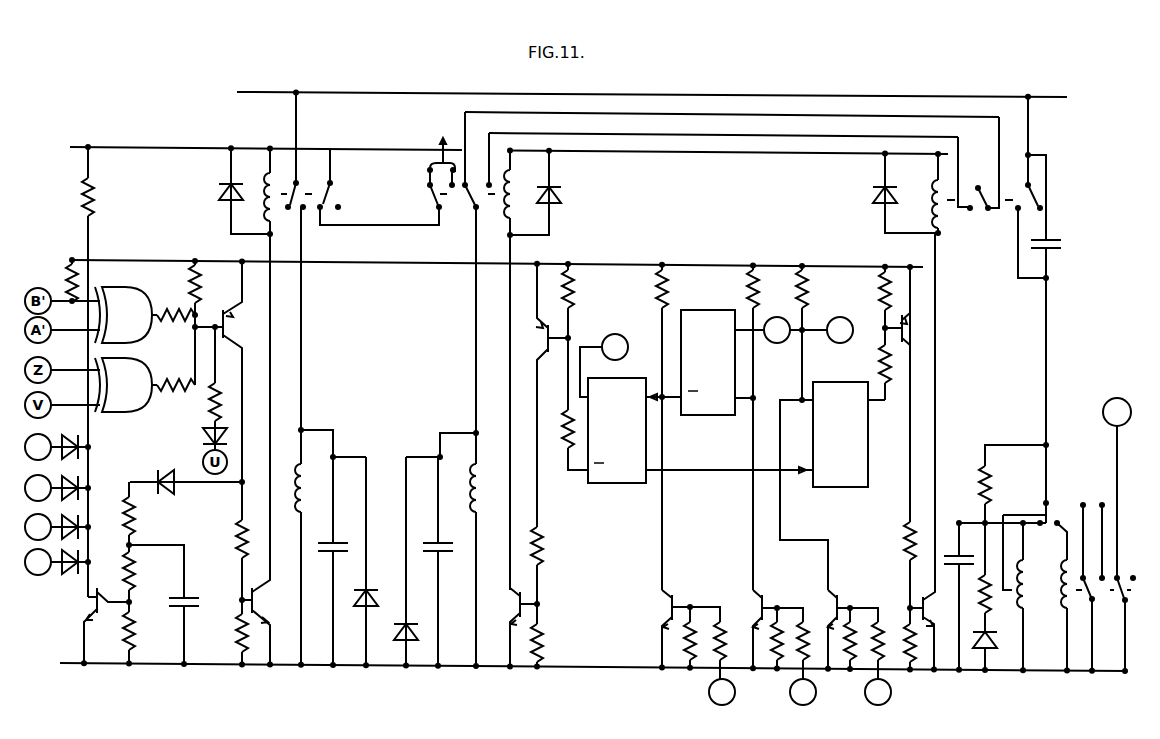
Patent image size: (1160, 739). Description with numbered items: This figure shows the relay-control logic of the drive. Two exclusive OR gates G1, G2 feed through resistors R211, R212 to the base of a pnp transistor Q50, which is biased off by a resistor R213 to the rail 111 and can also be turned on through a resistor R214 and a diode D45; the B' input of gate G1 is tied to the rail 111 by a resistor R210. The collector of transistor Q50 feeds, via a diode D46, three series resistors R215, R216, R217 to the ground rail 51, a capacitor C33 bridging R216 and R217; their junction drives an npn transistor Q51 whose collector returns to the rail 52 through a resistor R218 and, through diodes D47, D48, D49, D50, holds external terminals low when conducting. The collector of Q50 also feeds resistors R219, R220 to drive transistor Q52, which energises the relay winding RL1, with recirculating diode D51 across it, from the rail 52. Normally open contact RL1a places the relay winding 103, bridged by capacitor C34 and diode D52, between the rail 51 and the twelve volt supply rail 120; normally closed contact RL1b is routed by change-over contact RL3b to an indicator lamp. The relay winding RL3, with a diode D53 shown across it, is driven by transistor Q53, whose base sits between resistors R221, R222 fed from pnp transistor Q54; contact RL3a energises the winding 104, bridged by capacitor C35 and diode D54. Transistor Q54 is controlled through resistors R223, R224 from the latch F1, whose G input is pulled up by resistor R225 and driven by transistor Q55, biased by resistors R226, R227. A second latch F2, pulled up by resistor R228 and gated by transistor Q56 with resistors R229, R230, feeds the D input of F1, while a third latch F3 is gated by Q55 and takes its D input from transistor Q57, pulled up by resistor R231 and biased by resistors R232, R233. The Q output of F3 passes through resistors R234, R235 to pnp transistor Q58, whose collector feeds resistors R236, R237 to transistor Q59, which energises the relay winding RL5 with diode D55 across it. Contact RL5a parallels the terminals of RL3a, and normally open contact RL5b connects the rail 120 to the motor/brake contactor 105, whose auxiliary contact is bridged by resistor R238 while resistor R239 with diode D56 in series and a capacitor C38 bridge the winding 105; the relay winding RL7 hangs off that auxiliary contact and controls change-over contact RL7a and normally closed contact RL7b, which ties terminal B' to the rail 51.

The supply rail 120 is at (352, 92).
The rail 52 is at (172, 148).
The rail 111 is at (192, 260).
The rail 51 is at (435, 666).
The resistor R218 is at (100, 190).
The resistor R210 is at (53, 276).
The exclusive OR gate G1 is at (123, 305).
The exclusive OR gate G2 is at (122, 412).
The resistor R211 is at (170, 327).
The resistor R212 is at (181, 353).
The resistor R213 is at (188, 298).
The resistor R214 is at (208, 392).
The pnp transistor Q50 is at (245, 370).
The diode D45 is at (203, 437).
The diode D46 is at (165, 492).
The diode D47 is at (76, 447).
The diode D48 is at (74, 483).
The diode D49 is at (74, 521).
The diode D50 is at (73, 557).
The resistor R215 is at (154, 515).
The resistor R216 is at (160, 572).
The resistor R217 is at (152, 634).
The capacitor C33 is at (176, 606).
The npn transistor Q51 is at (84, 614).
The resistor R219 is at (238, 546).
The resistor R220 is at (220, 633).
The npn transistor Q52 is at (254, 612).
The relay winding RL1 is at (262, 198).
The current recirculating diode D51 is at (226, 187).
The normally open contact RL1a is at (300, 216).
The normally closed contact RL1b is at (332, 196).
The change over contact RL3a is at (468, 214).
The change over contact RL3b is at (430, 194).
The relay winding RL3 is at (535, 180).
The diode D53 is at (558, 190).
The relay winding 103 is at (308, 508).
The capacitor C34 is at (346, 548).
The current recirculating diode D52 is at (356, 596).
The relay winding 104 is at (480, 486).
The capacitor C35 is at (448, 552).
The current recirculating diode D54 is at (396, 628).
The pnp transistor Q54 is at (545, 345).
The resistor R222 is at (545, 550).
The npn transistor Q53 is at (512, 608).
The resistor R221 is at (546, 650).
The resistor R223 is at (596, 292).
The resistor R224 is at (565, 456).
The latch circuit F1 is at (696, 408).
The resistor R225 is at (656, 284).
The latch circuit F2 is at (767, 362).
The resistor R228 is at (746, 304).
The resistor R231 is at (808, 304).
The latch circuit F3 is at (849, 434).
The resistor R235 is at (886, 290).
The resistor R234 is at (896, 378).
The pnp transistor Q58 is at (906, 332).
The resistor R236 is at (903, 548).
The resistor R237 is at (908, 660).
The npn transistor Q59 is at (937, 453).
The npn transistor Q55 is at (660, 612).
The resistor R226 is at (686, 662).
The resistor R227 is at (738, 600).
The npn transistor Q56 is at (758, 596).
The resistor R229 is at (774, 662).
The resistor R230 is at (815, 606).
The npn transistor Q57 is at (832, 596).
The resistor R232 is at (848, 662).
The resistor R233 is at (879, 646).
The current recirculating diode D55 is at (872, 194).
The relay winding RL5 is at (930, 196).
The change-over contact RL5a is at (972, 212).
The normally open contact RL5b is at (1042, 196).
The resistor R238 is at (978, 490).
The capacitor C38 is at (950, 555).
The resistor R239 is at (990, 530).
The current recirculating diode D56 is at (984, 656).
The motor/brake contactor 105 is at (1030, 608).
The relay winding RL7 is at (1058, 578).
The change over contact RL7a is at (1084, 610).
The normally closed contact RL7b is at (1124, 610).